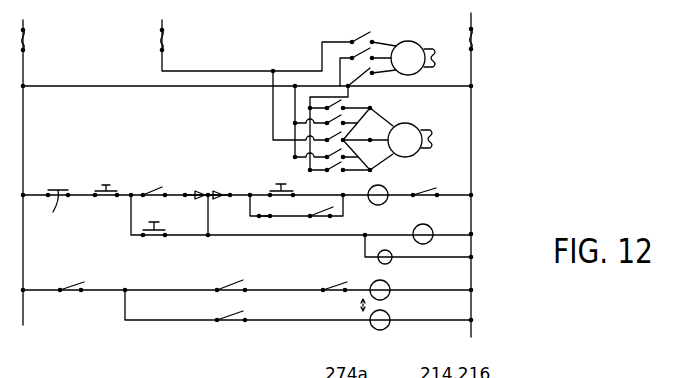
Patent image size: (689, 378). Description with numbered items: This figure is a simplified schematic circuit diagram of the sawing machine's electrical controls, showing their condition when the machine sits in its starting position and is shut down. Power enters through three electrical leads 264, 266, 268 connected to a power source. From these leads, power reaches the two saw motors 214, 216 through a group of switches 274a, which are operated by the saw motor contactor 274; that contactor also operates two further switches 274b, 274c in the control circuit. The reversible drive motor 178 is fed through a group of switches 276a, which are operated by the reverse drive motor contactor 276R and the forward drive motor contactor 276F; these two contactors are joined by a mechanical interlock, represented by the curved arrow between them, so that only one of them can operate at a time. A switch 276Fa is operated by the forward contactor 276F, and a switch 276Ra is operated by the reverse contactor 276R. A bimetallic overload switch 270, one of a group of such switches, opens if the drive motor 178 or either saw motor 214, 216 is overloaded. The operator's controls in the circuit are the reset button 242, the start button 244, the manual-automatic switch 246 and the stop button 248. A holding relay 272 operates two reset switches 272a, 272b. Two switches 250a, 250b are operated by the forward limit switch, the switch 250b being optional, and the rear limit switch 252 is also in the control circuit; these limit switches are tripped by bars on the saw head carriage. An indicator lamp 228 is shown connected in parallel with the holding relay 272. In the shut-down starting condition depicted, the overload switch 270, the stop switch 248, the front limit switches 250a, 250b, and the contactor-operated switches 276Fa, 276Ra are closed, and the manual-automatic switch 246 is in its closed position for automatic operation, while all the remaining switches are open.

The electrical lead 264 is at (25, 21).
The electrical lead 266 is at (164, 21).
The electrical lead 268 is at (473, 21).
The saw motor contactor switches 274a is at (358, 64).
The saw motor 214 is at (431, 45).
The saw motor 216 is at (431, 45).
The drive motor 178 is at (417, 123).
The drive motor switches 276a is at (334, 166).
The bimetallic overload switch 270 is at (58, 188).
The stop button 248 is at (104, 199).
The reset switch 272a is at (150, 192).
The front limit switch contact 250b is at (187, 190).
The front limit switch contact 250a is at (210, 191).
The start button 244 is at (277, 186).
The reset button 242 is at (150, 240).
The manual-automatic switch 246 is at (260, 221).
The saw motor contactor switch 274b is at (322, 221).
The saw motor contactor 274 is at (373, 205).
The reverse contactor switch 276Ra is at (425, 195).
The holding relay 272 is at (436, 228).
The indicator lamp 228 is at (392, 260).
The reset switch 272b is at (72, 287).
The rear limit switch 252 is at (224, 287).
The forward contactor switch 276Fa is at (327, 297).
The saw motor contactor switch 274c is at (237, 323).
The reverse drive motor contactor 276R is at (392, 294).
The forward drive motor contactor 276F is at (390, 316).